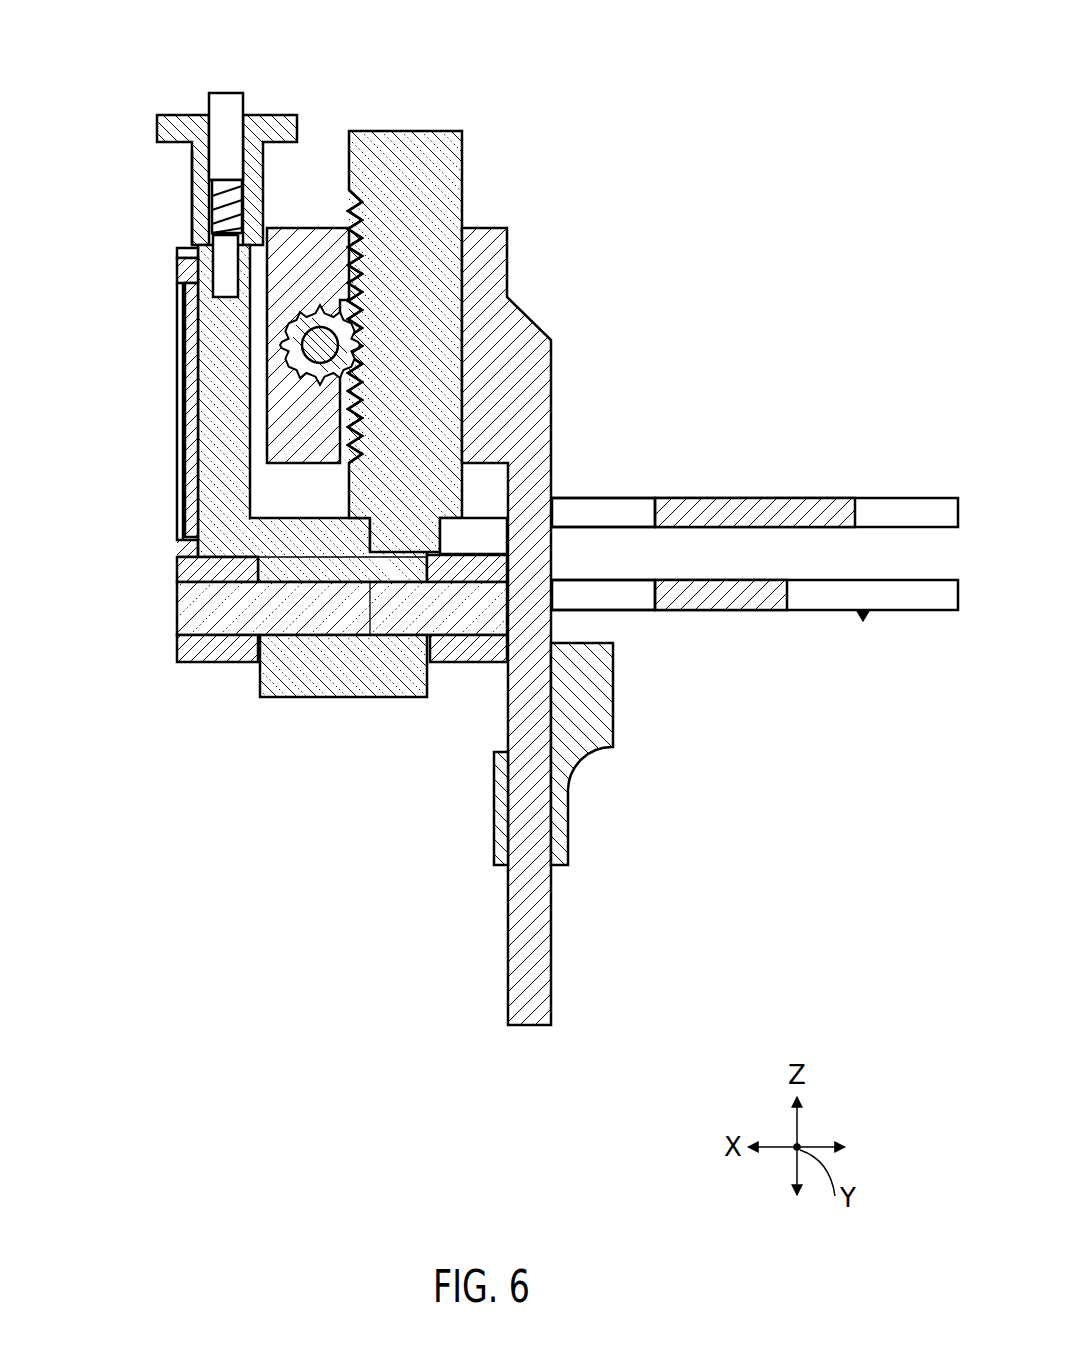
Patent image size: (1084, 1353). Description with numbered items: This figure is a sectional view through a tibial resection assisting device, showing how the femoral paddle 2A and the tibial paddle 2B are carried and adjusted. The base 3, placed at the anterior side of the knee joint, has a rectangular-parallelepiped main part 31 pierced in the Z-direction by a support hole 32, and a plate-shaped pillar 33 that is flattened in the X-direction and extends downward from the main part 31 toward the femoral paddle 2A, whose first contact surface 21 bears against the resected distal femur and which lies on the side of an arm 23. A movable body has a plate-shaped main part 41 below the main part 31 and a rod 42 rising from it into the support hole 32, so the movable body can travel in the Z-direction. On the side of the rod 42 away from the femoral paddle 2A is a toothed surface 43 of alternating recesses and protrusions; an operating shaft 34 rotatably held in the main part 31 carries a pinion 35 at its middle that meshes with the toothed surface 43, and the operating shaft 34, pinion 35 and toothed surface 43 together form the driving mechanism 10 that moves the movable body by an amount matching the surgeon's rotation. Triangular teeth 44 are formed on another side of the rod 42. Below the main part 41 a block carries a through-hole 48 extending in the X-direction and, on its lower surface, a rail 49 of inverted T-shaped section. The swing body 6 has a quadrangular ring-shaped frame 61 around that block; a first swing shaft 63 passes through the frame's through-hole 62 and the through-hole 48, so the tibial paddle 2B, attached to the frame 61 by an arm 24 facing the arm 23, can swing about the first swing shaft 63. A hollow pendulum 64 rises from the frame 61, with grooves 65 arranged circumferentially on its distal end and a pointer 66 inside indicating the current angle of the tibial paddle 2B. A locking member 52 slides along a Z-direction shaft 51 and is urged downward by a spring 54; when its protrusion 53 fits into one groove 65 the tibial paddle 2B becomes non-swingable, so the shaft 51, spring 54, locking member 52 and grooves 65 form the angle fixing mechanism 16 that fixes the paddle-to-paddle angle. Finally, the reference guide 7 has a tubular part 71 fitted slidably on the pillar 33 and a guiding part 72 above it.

The femoral paddle 2A is at (738, 512).
The tibial paddle 2B is at (723, 603).
The base 3 is at (531, 317).
The swing body 6 is at (228, 666).
The reference guide 7 is at (536, 770).
The driving mechanism 10 is at (200, 232).
The angle fixing mechanism 16 is at (193, 178).
The first contact surface 21 is at (795, 512).
The arm 23 is at (612, 510).
The arm 24 is at (622, 600).
The main part 31 is at (228, 470).
The support hole 32 is at (442, 250).
The plate-shaped pillar 33 is at (535, 1028).
The operating shaft 34 is at (318, 345).
The pinion 35 is at (282, 362).
The main part 41 is at (318, 542).
The rod 42 is at (400, 180).
The toothed surface 43 is at (345, 195).
The teeth 44 is at (293, 440).
The through-hole 48 is at (375, 620).
The rail 49 is at (340, 680).
The shaft 51 is at (227, 110).
The locking member 52 is at (175, 126).
The protrusion 53 is at (208, 250).
The spring 54 is at (222, 195).
The frame 61 is at (205, 662).
The through-hole 62 is at (205, 622).
The first swing shaft 63 is at (200, 577).
The pendulum 64 is at (181, 271).
The grooves 65 is at (178, 252).
The pointer 66 is at (190, 400).
The tubular part 71 is at (500, 812).
The guiding part 72 is at (600, 700).